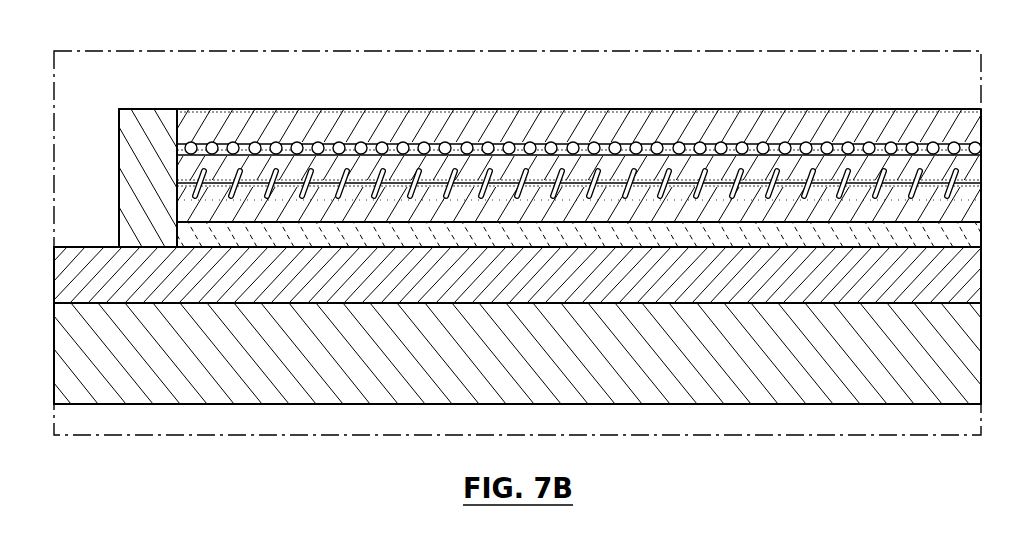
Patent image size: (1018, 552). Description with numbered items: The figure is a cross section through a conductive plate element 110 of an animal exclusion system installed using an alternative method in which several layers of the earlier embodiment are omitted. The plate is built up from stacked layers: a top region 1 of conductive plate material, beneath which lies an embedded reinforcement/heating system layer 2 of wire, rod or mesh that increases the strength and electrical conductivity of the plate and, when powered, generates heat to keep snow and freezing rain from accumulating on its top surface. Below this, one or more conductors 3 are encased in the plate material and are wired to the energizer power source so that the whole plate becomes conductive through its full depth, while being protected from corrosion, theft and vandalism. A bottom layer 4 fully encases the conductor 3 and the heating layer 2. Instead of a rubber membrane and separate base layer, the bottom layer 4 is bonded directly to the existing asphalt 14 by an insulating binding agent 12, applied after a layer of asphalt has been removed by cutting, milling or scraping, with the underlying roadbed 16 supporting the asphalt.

The first layer 1 is at (175, 120).
The reinforcement/heating system layer 2 is at (183, 142).
The conductor 3 is at (187, 177).
The bottom layer 4 is at (183, 215).
The insulating binding agent 12 is at (193, 236).
The existing asphalt 14 is at (532, 290).
The base layer 16 is at (532, 368).
The negative plate 110 is at (382, 127).